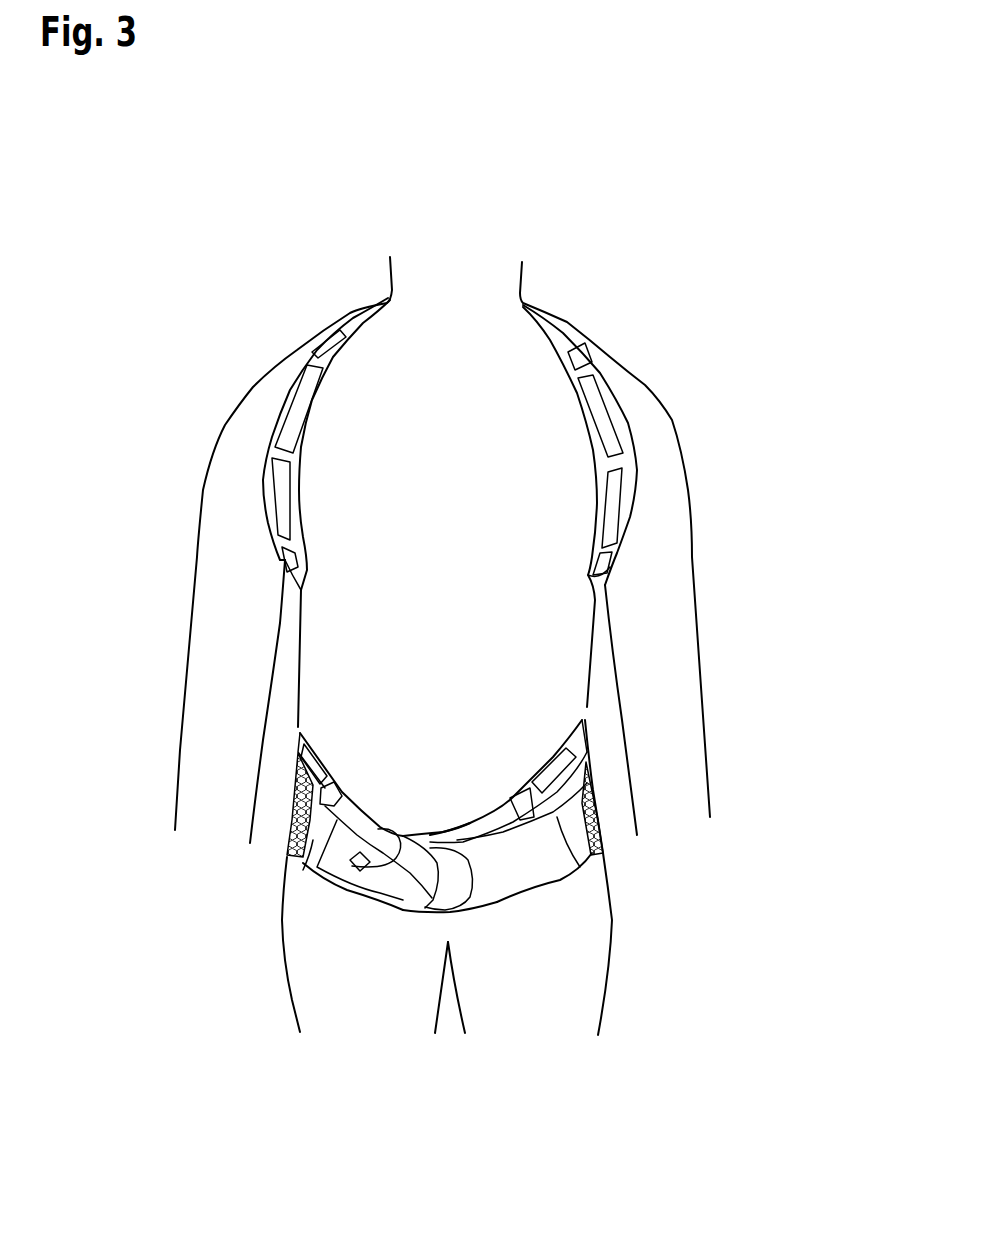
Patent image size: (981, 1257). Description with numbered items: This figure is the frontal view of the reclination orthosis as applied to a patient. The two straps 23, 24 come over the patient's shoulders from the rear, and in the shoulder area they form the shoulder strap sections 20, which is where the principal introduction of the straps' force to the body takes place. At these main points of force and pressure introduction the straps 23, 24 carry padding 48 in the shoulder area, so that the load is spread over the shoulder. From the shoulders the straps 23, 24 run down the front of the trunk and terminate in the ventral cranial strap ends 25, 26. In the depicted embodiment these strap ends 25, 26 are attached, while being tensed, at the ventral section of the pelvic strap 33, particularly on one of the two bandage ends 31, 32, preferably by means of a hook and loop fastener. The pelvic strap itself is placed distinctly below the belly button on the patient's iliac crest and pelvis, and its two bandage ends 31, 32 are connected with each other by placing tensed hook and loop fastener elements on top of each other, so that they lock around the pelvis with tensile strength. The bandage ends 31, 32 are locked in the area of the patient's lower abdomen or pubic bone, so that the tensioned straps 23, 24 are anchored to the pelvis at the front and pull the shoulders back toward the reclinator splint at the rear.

The shoulder strap section 20 is at (553, 404).
The strap 23 is at (603, 400).
The strap 24 is at (302, 400).
The padding 48 is at (272, 432).
The ventral cranial strap end 25 is at (360, 873).
The ventral cranial strap end 26 is at (450, 857).
The bandage end 31 is at (543, 860).
The bandage end 32 is at (303, 864).
The ventral section of pelvic strap 33 is at (495, 917).